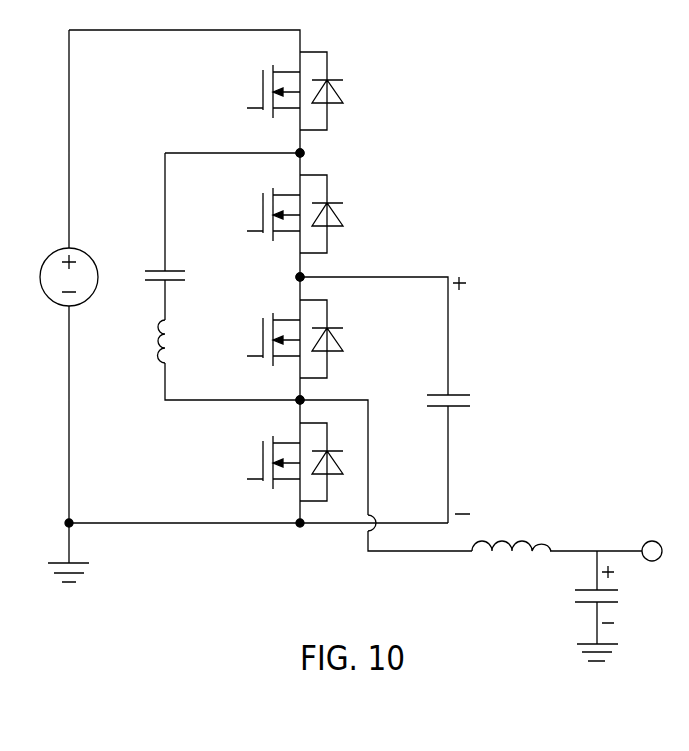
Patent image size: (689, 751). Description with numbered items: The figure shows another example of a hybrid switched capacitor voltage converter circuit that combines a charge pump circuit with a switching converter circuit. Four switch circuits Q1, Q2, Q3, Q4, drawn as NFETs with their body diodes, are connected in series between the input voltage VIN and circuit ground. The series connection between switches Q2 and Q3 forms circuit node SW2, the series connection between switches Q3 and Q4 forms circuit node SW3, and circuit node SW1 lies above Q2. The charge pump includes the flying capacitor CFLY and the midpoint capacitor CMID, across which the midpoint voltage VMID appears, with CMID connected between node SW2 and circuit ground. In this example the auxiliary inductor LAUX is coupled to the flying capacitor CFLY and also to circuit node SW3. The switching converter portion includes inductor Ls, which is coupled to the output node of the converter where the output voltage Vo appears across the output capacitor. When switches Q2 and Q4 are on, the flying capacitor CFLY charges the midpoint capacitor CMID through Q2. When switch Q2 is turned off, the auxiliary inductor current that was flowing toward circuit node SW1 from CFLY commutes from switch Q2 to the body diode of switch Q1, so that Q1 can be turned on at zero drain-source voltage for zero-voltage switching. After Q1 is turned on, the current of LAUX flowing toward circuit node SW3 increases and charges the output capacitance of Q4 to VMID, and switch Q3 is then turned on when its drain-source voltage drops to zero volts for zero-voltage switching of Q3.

The input voltage VIN is at (67, 260).
The first switch circuit Q1 is at (289, 91).
The second switch circuit Q2 is at (289, 214).
The third switch circuit Q3 is at (289, 339).
The fourth switch circuit Q4 is at (289, 462).
The circuit node SW1 is at (321, 159).
The circuit node SW2 is at (279, 283).
The circuit node SW3 is at (341, 389).
The flying capacitor CFLY is at (152, 256).
The auxiliary inductor LAUX is at (132, 340).
The midpoint voltage VMID is at (473, 395).
The midpoint capacitor CMID is at (460, 442).
The inductor Ls is at (511, 531).
The output voltage Vo is at (612, 594).